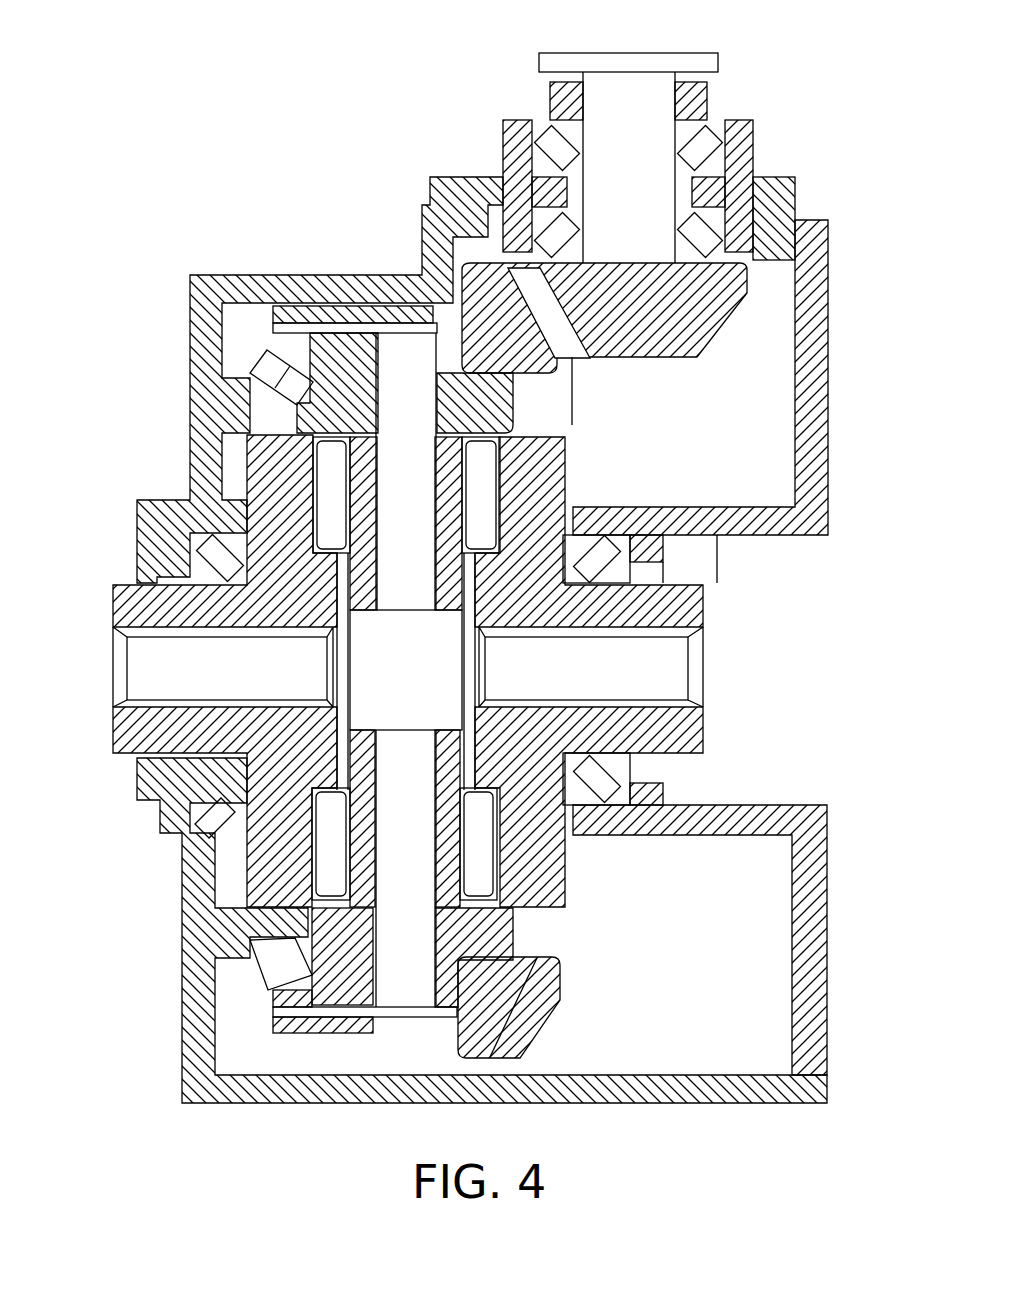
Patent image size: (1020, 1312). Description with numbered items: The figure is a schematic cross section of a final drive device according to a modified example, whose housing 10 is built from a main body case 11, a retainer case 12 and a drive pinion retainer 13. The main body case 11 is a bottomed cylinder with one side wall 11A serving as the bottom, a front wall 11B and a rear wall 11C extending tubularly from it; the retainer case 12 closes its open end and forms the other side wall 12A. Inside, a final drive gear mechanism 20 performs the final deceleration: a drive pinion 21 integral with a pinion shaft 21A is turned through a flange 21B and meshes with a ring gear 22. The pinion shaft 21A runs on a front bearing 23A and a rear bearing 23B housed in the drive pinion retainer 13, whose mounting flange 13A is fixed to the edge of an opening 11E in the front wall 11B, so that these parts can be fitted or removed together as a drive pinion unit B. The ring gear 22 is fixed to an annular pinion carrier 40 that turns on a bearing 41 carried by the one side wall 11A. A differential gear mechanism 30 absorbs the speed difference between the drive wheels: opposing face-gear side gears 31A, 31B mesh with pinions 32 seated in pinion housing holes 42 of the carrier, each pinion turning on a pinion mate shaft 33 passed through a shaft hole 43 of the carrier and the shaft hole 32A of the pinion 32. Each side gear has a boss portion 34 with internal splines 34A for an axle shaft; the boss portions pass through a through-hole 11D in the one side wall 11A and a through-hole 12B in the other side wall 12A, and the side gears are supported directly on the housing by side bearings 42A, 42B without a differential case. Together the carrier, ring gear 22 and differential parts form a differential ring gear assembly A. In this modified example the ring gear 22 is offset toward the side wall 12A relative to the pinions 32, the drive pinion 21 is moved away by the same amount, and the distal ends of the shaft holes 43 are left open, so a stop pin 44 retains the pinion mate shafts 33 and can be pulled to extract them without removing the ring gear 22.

The housing 10 is at (238, 262).
The main body case 11 is at (180, 362).
The one side wall 11A is at (210, 460).
The front wall 11B is at (297, 290).
The rear wall 11C is at (335, 1105).
The through-hole 11D is at (150, 580).
The opening 11E is at (498, 218).
The retainer case 12 is at (835, 350).
The other side wall 12A is at (812, 448).
The through-hole 12B is at (643, 568).
The drive pinion retainer 13 is at (510, 140).
The mounting flange 13A is at (790, 192).
The final drive gear mechanism 20 is at (612, 378).
The drive pinion 21 is at (695, 330).
The pinion shaft 21A is at (632, 100).
The flange 21B is at (582, 52).
The ring gear 22 is at (548, 1005).
The front bearing 23A is at (712, 135).
The rear bearing 23B is at (700, 228).
The differential gear mechanism 30 is at (590, 948).
The side gear 31A is at (270, 455).
The side gear 31B is at (535, 480).
The pinion 32 is at (440, 462).
The shaft hole 32A is at (378, 477).
The pinion mate shaft 33 is at (420, 529).
The boss portion 34 is at (160, 605).
The splines 34A is at (233, 677).
The pinion carrier 40 is at (268, 318).
The bearing 41 is at (270, 355).
The pinion housing hole 42 is at (368, 735).
The side bearing 42A is at (205, 505).
The side bearing 42B is at (600, 548).
The shaft hole 43 is at (375, 955).
The stop pin 44 is at (395, 328).
The differential ring gear assembly A is at (668, 983).
The drive pinion unit B is at (808, 128).